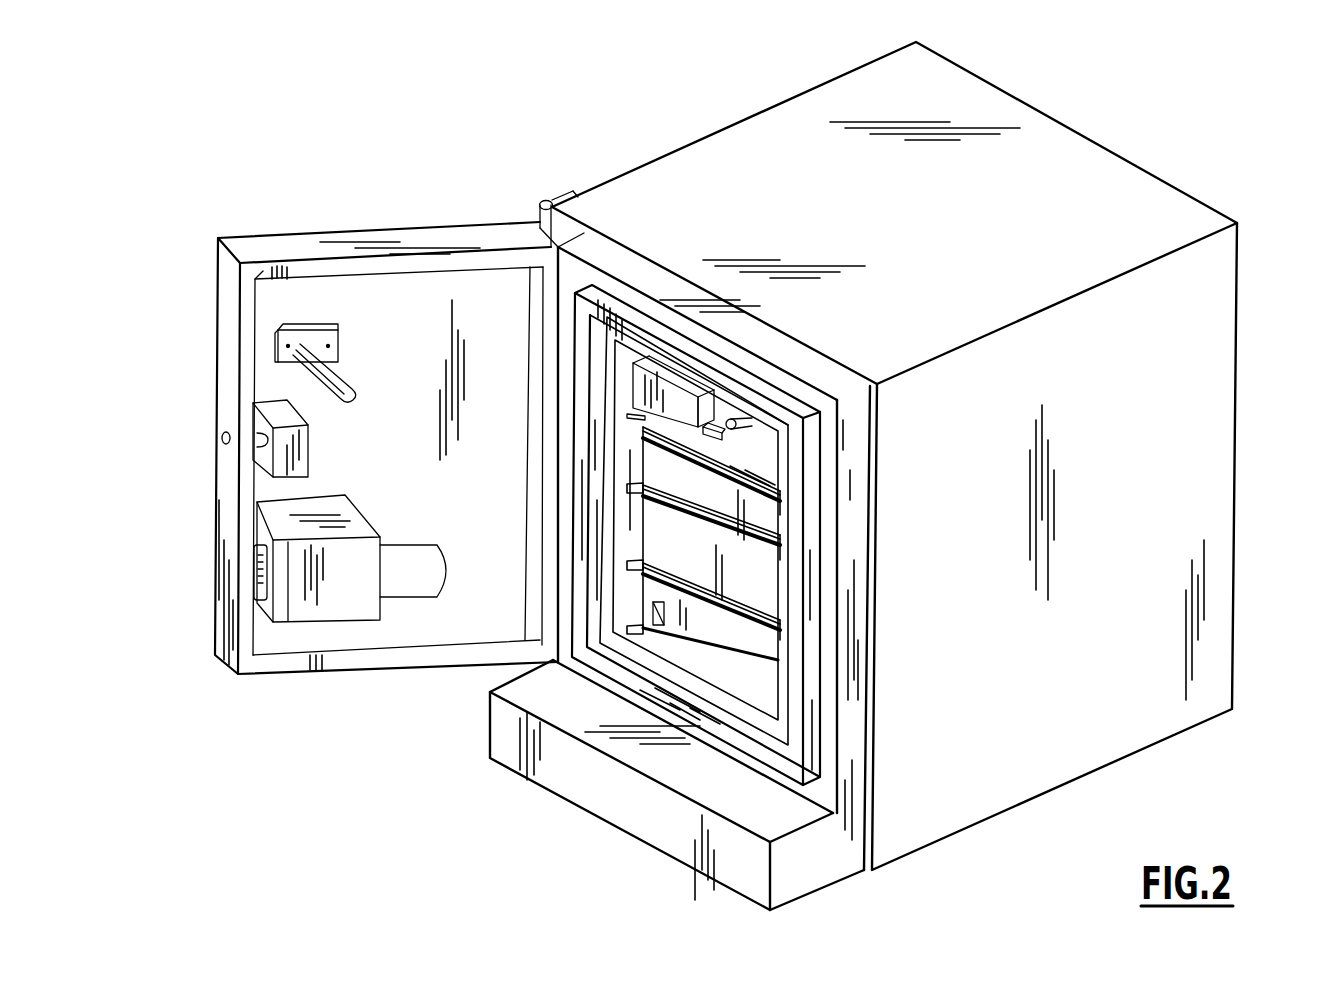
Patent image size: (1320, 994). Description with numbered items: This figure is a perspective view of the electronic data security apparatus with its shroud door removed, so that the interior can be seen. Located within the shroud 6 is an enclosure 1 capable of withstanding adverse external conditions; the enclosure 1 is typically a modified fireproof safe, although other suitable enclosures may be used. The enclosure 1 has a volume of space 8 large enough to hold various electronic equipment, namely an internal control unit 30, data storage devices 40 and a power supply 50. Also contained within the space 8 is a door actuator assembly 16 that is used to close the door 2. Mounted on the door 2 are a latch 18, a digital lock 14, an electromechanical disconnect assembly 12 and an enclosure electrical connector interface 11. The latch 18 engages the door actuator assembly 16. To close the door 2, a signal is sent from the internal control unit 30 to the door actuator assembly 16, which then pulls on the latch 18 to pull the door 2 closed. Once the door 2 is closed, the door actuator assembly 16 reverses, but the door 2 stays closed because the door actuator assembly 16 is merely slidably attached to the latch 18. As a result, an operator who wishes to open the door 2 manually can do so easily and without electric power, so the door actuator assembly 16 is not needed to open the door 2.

The enclosure 1 is at (806, 864).
The door 2 is at (405, 230).
The shroud 6 is at (1210, 539).
The volume of space 8 is at (623, 597).
The enclosure electrical connector interface 11 is at (257, 563).
The electromechanical disconnect assembly 12 is at (350, 612).
The digital lock 14 is at (260, 403).
The door actuator assembly 16 is at (740, 420).
The latch 18 is at (300, 330).
The internal control unit 30 is at (663, 377).
The data storage devices 40 is at (767, 520).
The power supply 50 is at (767, 673).